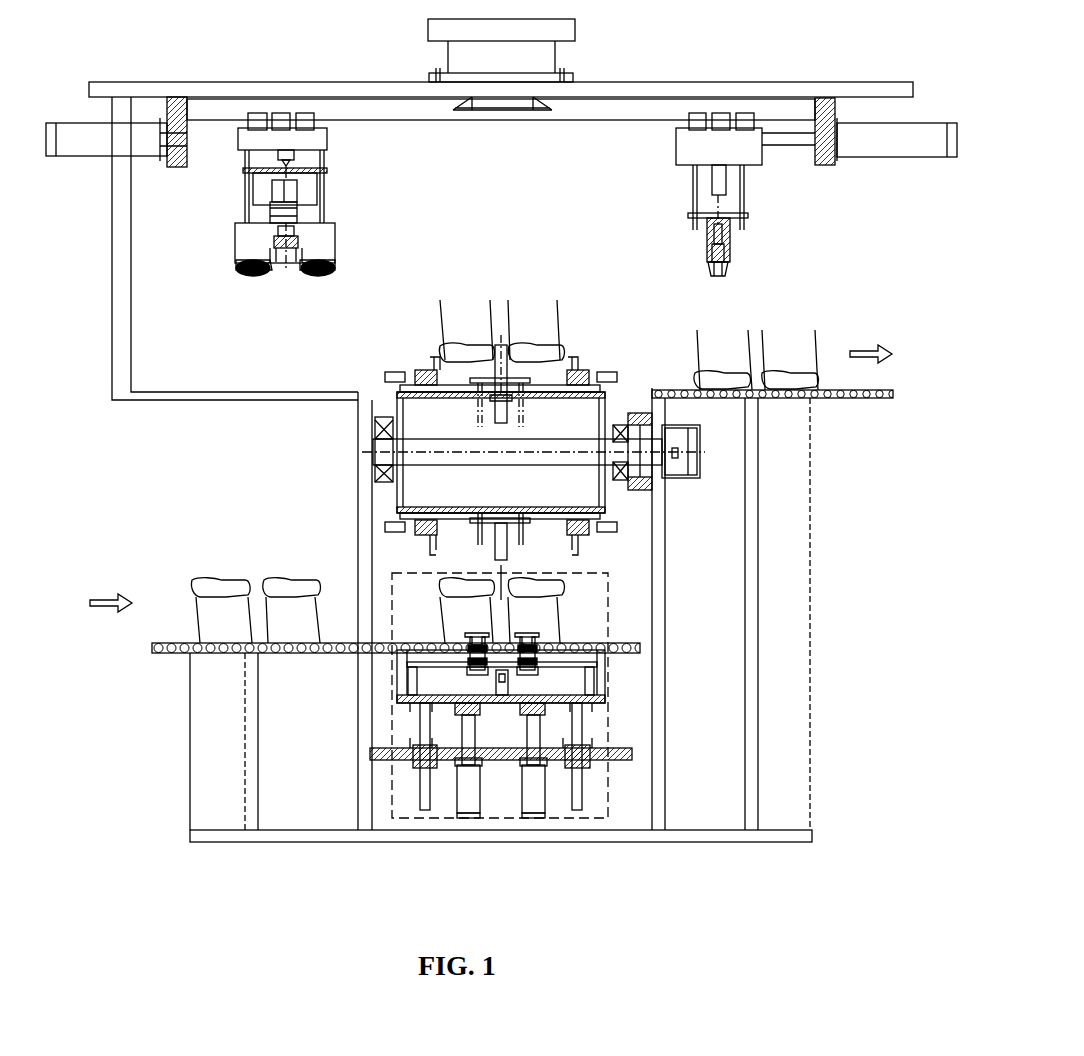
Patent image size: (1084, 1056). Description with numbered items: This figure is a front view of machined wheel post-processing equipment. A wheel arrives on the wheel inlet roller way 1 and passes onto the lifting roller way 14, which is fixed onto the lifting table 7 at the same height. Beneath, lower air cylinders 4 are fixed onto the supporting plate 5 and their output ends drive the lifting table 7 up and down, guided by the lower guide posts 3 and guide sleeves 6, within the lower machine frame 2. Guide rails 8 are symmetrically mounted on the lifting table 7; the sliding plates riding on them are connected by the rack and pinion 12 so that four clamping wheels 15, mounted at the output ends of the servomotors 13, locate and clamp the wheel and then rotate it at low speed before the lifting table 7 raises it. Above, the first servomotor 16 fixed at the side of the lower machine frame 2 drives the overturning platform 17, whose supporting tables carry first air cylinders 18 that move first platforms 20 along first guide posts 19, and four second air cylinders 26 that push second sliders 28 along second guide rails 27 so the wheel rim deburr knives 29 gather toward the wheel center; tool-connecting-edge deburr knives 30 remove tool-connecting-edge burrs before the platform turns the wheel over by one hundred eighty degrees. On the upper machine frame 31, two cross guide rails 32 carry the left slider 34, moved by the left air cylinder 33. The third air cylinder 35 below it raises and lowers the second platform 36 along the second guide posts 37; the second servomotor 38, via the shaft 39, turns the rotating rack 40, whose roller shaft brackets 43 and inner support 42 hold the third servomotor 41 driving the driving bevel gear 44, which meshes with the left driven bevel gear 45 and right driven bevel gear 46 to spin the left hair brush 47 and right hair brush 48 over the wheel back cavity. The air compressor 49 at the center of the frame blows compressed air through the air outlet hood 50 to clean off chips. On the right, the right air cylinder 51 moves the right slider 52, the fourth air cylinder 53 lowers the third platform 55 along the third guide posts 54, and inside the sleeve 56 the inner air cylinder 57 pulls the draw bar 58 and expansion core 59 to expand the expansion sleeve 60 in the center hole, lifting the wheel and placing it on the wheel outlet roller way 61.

The wheel inlet roller way 1 is at (183, 641).
The lower machine frame 2 is at (372, 810).
The lower guide posts 3 is at (460, 808).
The lower air cylinders 4 is at (420, 808).
The supporting plate 5 is at (392, 751).
The guide sleeves 6 is at (410, 742).
The lifting table 7 is at (397, 700).
The guide rails 8 is at (592, 668).
The rack and pinion 12 is at (506, 680).
The servomotors 13 is at (470, 662).
The lifting roller way 14 is at (532, 645).
The clamping wheels 15 is at (528, 632).
The first servomotor 16 is at (686, 452).
The overturning platform 17 is at (545, 440).
The first air cylinders 18 is at (497, 412).
The first guide posts 19 is at (497, 400).
The first platforms 20 is at (472, 392).
The second air cylinders 26 is at (605, 382).
The second guide rails 27 is at (597, 378).
The second sliders 28 is at (572, 374).
The wheel rim deburr knives 29 is at (578, 358).
The tool-connecting-edge deburr knives 30 is at (510, 352).
The upper machine frame 31 is at (150, 95).
The cross guide rails 32 is at (212, 108).
The left air cylinder 33 is at (98, 135).
The left slider 34 is at (292, 137).
The third air cylinder 35 is at (295, 160).
The second platform 36 is at (322, 170).
The second guide posts 37 is at (322, 190).
The second servomotor 38 is at (280, 195).
The shaft 39 is at (275, 210).
The rotating rack 40 is at (258, 228).
The third servomotor 41 is at (290, 232).
The inner support 42 is at (292, 242).
The roller shaft brackets 43 is at (270, 252).
The driving bevel gear 44 is at (302, 255).
The left driven bevel gear 45 is at (242, 262).
The right driven bevel gear 46 is at (318, 260).
The left hair brush 47 is at (236, 268).
The right hair brush 48 is at (336, 268).
The air compressor 49 is at (470, 68).
The air outlet hood 50 is at (480, 100).
The right air cylinder 51 is at (880, 132).
The right slider 52 is at (728, 148).
The fourth air cylinder 53 is at (695, 168).
The third guide posts 54 is at (718, 188).
The third platform 55 is at (705, 230).
The sleeve 56 is at (710, 250).
The inner air cylinder 57 is at (722, 232).
The draw bar 58 is at (730, 250).
The expansion core 59 is at (712, 268).
The expansion sleeve 60 is at (726, 268).
The wheel outlet roller way 61 is at (868, 390).